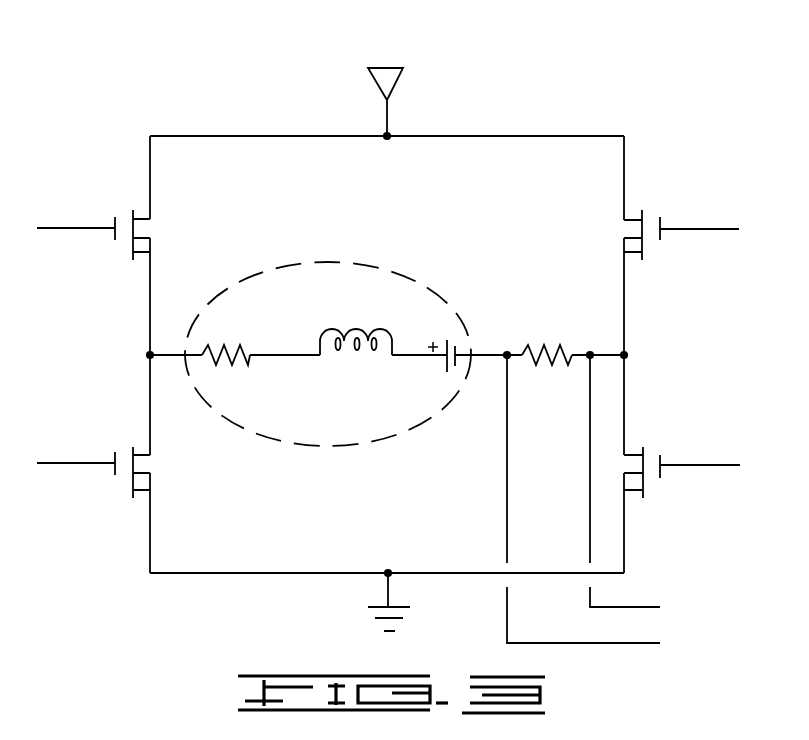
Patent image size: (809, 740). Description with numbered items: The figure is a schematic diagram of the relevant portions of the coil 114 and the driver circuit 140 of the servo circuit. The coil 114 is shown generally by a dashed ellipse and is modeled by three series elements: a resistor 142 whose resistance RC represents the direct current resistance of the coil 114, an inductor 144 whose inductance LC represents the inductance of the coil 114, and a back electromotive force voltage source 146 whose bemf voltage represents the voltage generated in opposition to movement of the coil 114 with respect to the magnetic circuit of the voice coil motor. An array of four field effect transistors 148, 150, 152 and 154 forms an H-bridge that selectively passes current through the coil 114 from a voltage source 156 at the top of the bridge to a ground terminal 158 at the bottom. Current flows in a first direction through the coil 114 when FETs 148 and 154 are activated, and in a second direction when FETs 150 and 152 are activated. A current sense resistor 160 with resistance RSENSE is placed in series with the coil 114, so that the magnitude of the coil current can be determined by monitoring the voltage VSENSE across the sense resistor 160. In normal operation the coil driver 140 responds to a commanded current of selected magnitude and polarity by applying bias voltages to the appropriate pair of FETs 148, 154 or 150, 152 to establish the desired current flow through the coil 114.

The driver circuit 140 is at (175, 97).
The coil 114 is at (388, 272).
The resistor 142 is at (212, 362).
The inductor 144 is at (357, 342).
The back electromotive force voltage source 146 is at (450, 338).
The field effect transistor 148 is at (132, 248).
The field effect transistor 150 is at (644, 222).
The field effect transistor 152 is at (131, 486).
The field effect transistor 154 is at (645, 460).
The voltage source 156 is at (403, 70).
The ground terminal 158 is at (373, 608).
The current sense resistor 160 is at (536, 360).